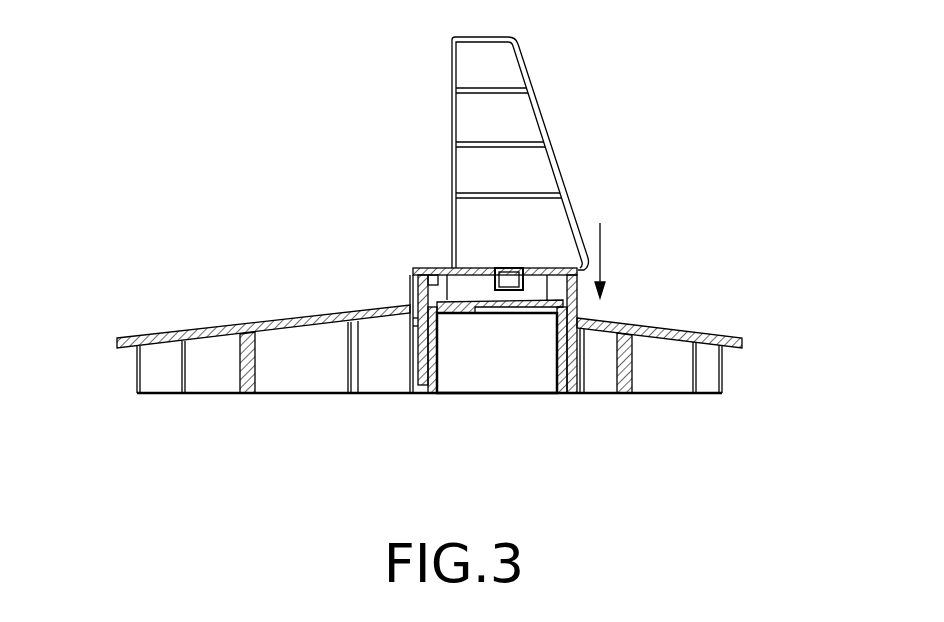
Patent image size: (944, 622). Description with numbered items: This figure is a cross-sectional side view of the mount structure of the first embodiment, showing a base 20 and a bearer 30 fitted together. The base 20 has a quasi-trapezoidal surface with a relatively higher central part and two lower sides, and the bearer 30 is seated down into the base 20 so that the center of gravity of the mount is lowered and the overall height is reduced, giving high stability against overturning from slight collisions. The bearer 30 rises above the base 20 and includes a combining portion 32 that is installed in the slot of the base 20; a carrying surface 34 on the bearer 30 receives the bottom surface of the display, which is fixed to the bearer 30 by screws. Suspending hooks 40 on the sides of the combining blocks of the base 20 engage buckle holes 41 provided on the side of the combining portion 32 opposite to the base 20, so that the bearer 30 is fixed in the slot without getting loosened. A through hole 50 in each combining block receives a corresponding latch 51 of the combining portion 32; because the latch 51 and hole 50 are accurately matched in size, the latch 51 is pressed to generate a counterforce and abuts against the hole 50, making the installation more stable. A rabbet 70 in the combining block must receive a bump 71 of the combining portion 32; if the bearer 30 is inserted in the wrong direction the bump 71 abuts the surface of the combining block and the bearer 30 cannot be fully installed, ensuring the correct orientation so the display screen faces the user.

The base 20 is at (147, 336).
The bearer 30 is at (528, 58).
The combining portion 32 is at (580, 309).
The carrying surface 34 is at (437, 268).
The suspending hook 40 is at (420, 354).
The buckle hole 41 is at (416, 322).
The through hole 50 is at (507, 303).
The latch 51 is at (522, 283).
The rabbet 70 is at (435, 306).
The bump 71 is at (460, 284).